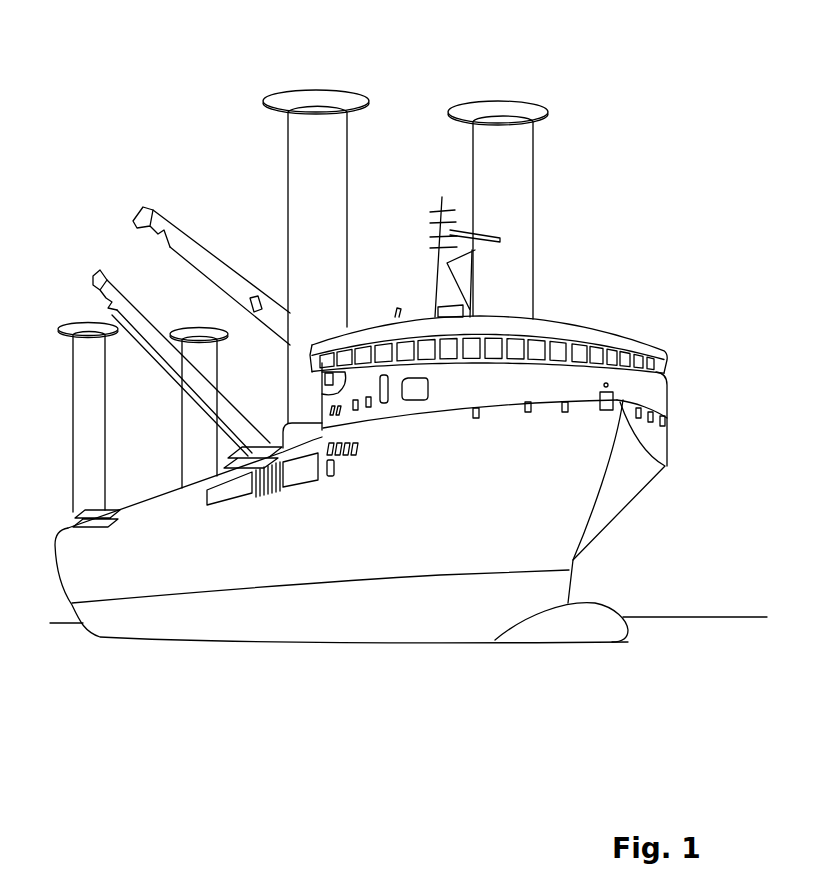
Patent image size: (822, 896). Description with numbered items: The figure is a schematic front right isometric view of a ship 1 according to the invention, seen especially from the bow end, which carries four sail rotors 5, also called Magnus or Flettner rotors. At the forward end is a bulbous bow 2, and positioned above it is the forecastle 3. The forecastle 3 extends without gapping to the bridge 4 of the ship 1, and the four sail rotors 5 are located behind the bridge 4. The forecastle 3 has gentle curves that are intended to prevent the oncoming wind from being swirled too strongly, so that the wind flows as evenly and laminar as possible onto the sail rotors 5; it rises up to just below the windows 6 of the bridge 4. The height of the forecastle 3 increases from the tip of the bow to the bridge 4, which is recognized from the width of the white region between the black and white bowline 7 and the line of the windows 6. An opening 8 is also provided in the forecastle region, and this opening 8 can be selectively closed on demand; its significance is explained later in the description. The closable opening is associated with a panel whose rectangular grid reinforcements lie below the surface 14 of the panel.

The ship 1 is at (360, 549).
The bulbous bow 2 is at (590, 630).
The forecastle 3 is at (650, 392).
The bridge 4 is at (640, 360).
The sail rotors 5 is at (330, 100).
The windows 6 is at (662, 365).
The bowline 7 is at (668, 418).
The opening 8 is at (416, 387).
The surface 14 is at (590, 373).